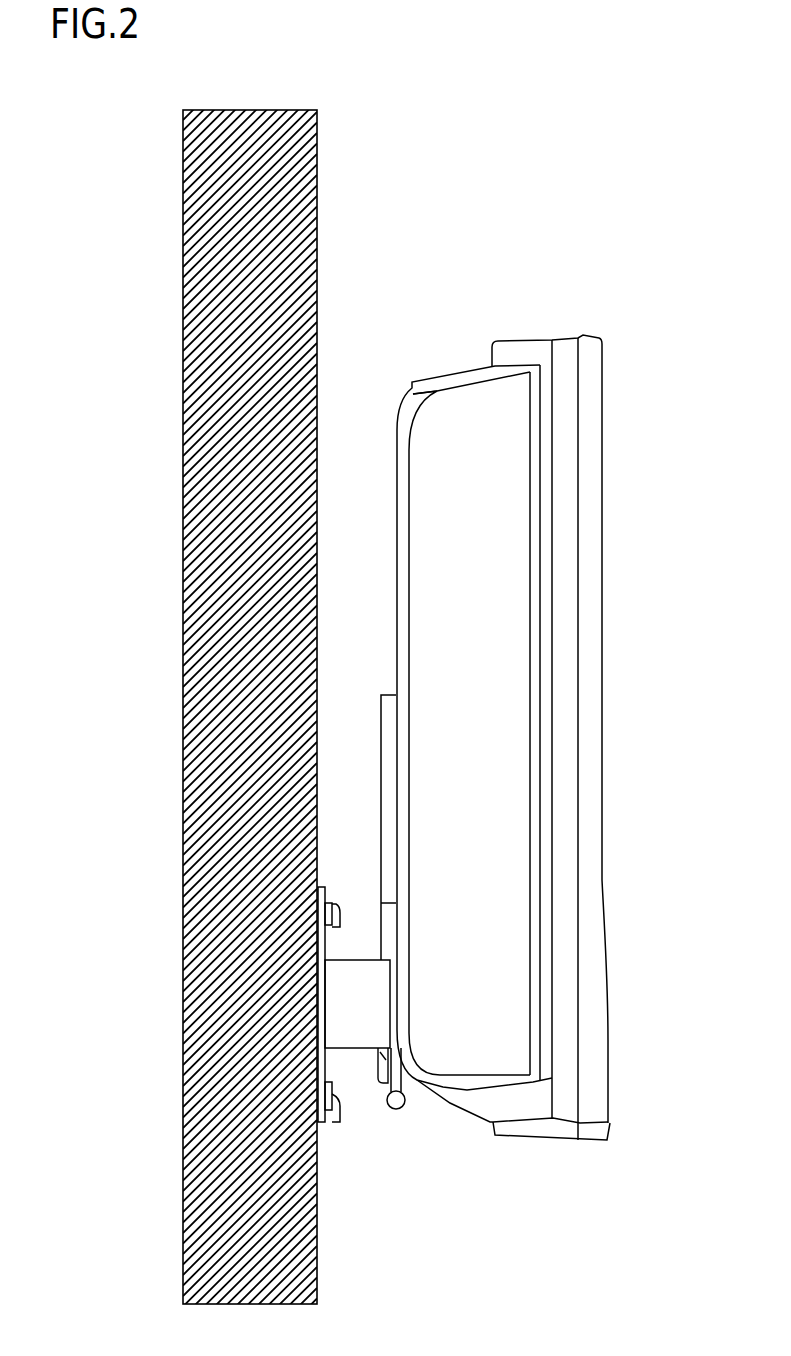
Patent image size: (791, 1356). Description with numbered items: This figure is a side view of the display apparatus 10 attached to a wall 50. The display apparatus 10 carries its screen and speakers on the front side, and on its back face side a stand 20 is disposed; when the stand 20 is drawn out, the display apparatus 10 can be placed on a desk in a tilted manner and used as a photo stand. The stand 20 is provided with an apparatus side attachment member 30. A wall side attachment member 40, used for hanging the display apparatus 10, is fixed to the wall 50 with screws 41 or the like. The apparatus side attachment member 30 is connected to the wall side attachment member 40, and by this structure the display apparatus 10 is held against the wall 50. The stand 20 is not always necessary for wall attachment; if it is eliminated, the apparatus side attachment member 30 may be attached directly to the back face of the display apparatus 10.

The display apparatus 10 is at (611, 312).
The stand 20 is at (398, 1109).
The apparatus side attachment member 30 is at (390, 932).
The wall side attachment member 40 is at (352, 1048).
The screws 41 is at (343, 903).
The wall 50 is at (318, 197).